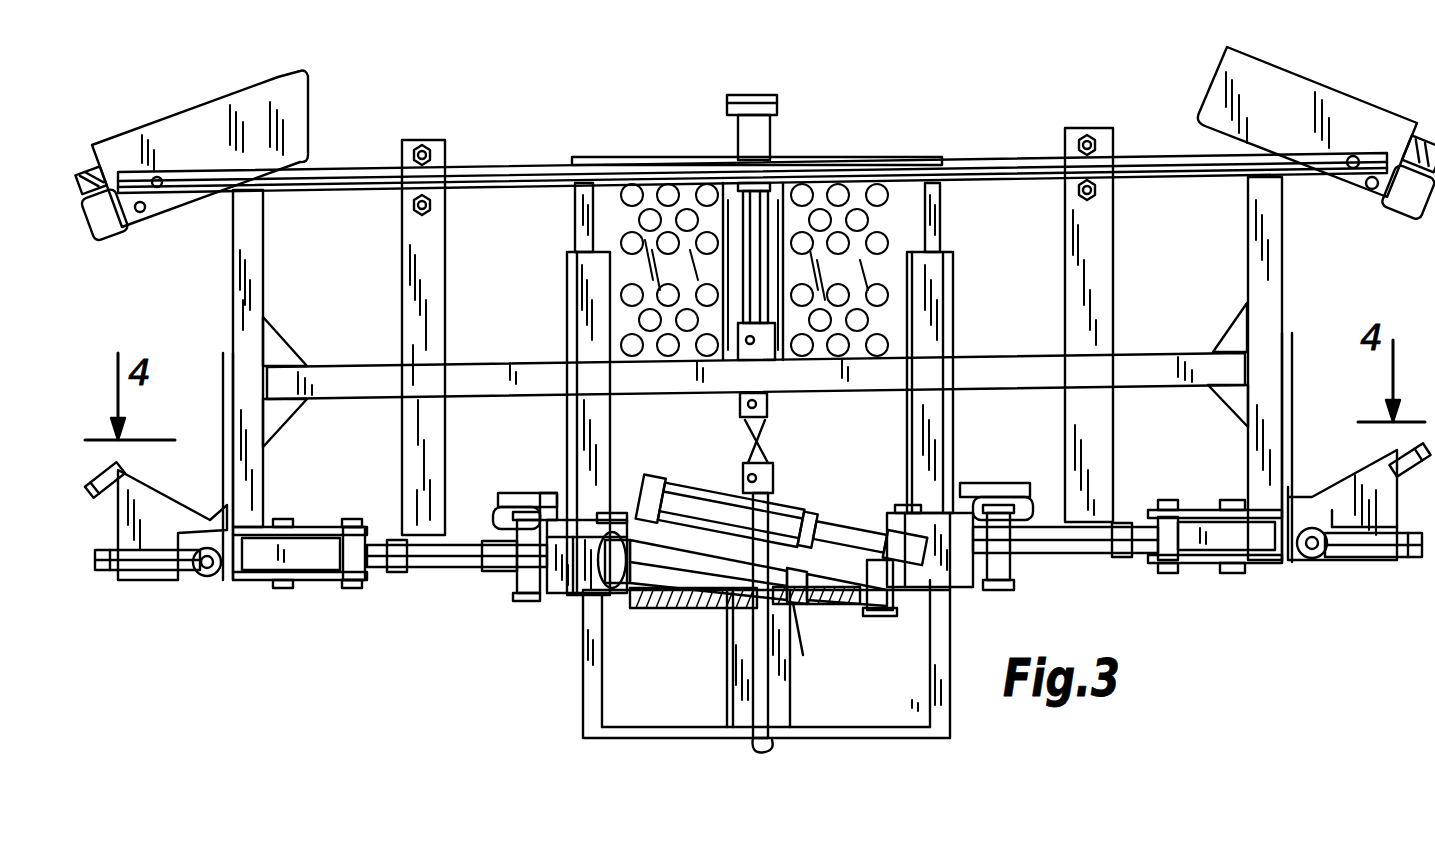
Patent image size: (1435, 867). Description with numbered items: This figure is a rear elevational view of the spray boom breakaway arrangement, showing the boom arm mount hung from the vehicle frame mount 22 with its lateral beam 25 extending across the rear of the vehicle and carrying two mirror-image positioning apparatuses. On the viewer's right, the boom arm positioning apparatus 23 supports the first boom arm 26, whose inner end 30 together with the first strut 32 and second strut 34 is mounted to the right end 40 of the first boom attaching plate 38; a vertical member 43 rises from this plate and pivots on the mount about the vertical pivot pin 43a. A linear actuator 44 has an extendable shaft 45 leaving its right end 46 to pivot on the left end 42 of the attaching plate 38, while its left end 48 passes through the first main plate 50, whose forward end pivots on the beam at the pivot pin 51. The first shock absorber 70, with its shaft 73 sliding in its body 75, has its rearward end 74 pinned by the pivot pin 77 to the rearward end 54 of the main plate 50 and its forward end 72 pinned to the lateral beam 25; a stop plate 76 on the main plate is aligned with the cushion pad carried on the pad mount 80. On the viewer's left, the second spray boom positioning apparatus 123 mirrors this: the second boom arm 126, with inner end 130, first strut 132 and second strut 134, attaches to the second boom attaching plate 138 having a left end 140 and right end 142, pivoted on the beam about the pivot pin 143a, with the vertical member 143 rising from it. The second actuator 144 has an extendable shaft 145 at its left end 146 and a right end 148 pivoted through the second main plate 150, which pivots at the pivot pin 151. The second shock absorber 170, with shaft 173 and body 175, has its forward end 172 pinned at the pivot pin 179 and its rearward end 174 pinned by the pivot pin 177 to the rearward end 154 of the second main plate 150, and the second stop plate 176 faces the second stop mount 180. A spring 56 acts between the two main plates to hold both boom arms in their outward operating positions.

The vehicle frame mount 22 is at (890, 208).
The boom arm positioning apparatus 23 is at (1040, 580).
The lateral beam 25 is at (312, 548).
The first boom arm 26 is at (1359, 537).
The inner end 30 is at (1325, 495).
The first strut 32 is at (1400, 455).
The second strut 34 is at (1415, 560).
The first boom attaching plate 38 is at (1238, 576).
The right end 40 is at (1300, 557).
The left end 42 is at (1215, 570).
The vertical member 43 is at (1258, 428).
The vertical pivot pin 43a is at (1195, 345).
The linear actuator 44 is at (1060, 555).
The extendable shaft 45 is at (1195, 573).
The right end 46 is at (1118, 553).
The left end 48 is at (830, 604).
The first main plate 50 is at (1012, 588).
The pivot pin 51 is at (900, 512).
The rearward end 54 is at (955, 590).
The spring 56 is at (716, 608).
The first shock absorber 70 is at (756, 500).
The forward end 72 is at (670, 490).
The shaft 73 is at (828, 527).
The rearward end 74 is at (867, 537).
The body 75 is at (718, 505).
The stop plate 76 is at (998, 497).
The pivot pin 77 is at (893, 513).
The pad mount 80 is at (980, 483).
The second spray boom positioning apparatus 123 is at (545, 640).
The second boom arm 126 is at (156, 556).
The inner end 130 is at (100, 472).
The first strut 132 is at (143, 487).
The second strut 134 is at (108, 572).
The second boom attaching plate 138 is at (730, 568).
The left end 140 is at (222, 585).
The right end 142 is at (350, 590).
The vertical member 143 is at (252, 420).
The pivot pin 143a is at (290, 348).
The second actuator 144 is at (475, 566).
The extendable shaft 145 is at (378, 578).
The left end 146 is at (405, 575).
The right end 148 is at (625, 520).
The second main plate 150 is at (557, 596).
The pivot pin 151 is at (572, 438).
The rearward end 154 is at (550, 493).
The second shock absorber 170 is at (665, 612).
The forward end 172 is at (875, 614).
The shaft 173 is at (809, 643).
The rearward end 174 is at (632, 598).
The body 175 is at (650, 608).
The second stop plate 176 is at (497, 517).
The pivot pin 177 is at (585, 648).
The pivot pin 179 is at (900, 607).
The second stop mount 180 is at (508, 493).